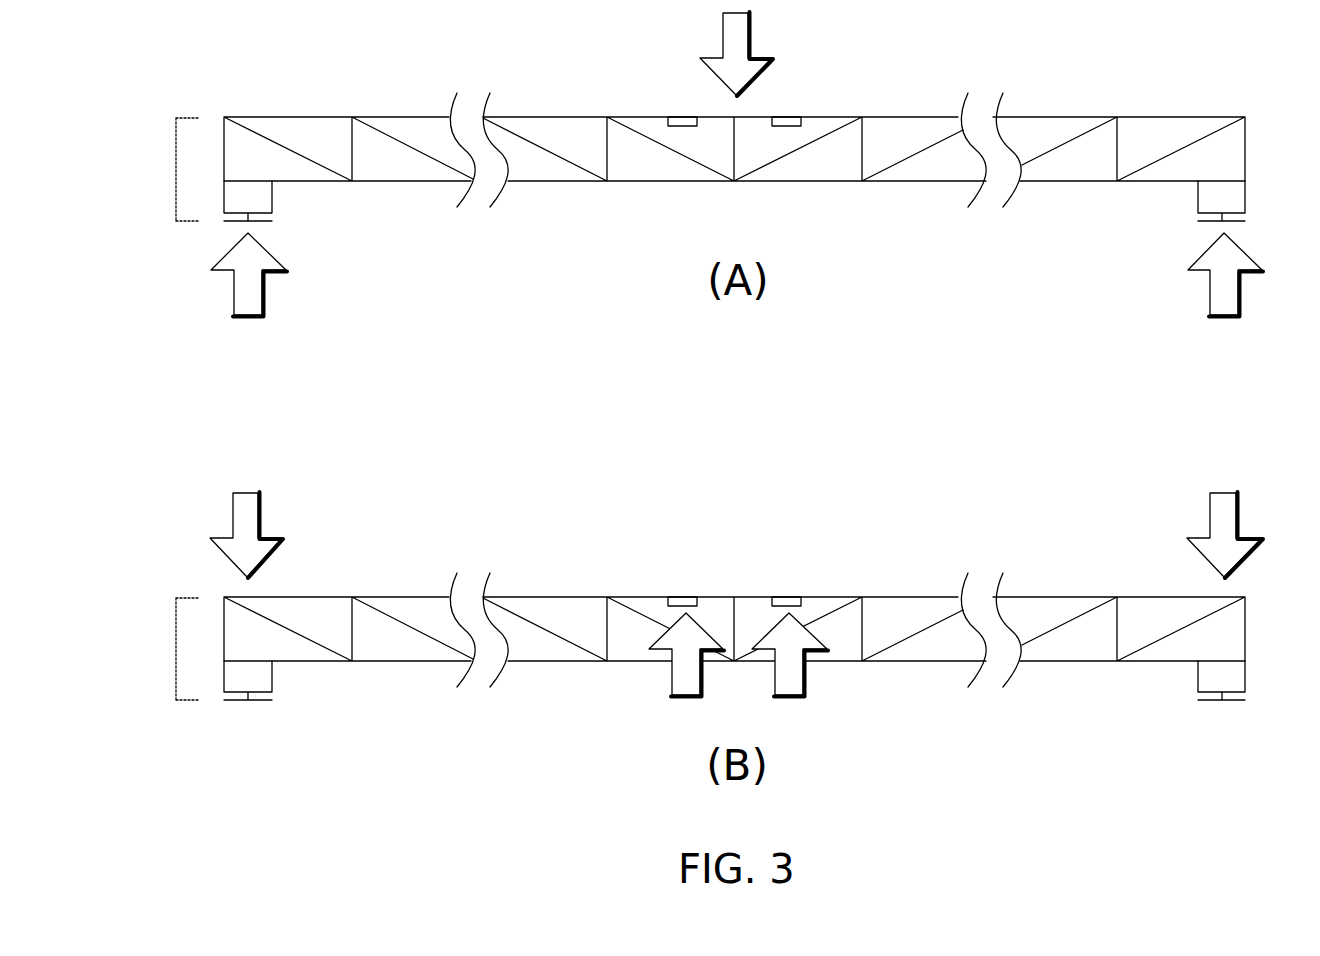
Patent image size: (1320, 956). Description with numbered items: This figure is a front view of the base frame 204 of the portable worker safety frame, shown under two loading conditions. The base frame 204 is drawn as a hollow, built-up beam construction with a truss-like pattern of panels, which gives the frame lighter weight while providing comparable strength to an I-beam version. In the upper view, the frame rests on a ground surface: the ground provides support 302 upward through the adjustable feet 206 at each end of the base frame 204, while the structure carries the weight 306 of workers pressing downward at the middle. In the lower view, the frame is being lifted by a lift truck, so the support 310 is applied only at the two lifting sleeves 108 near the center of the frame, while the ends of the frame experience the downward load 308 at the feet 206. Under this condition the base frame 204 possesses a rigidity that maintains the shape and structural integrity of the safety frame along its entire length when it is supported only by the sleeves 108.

The base frame 204 is at (176, 140).
The adjustable feet 206 is at (272, 198).
The support 302 is at (262, 283).
The weight 306 is at (748, 33).
The downward load force at supports 308 is at (258, 522).
The lifting sleeves 108 is at (686, 597).
The support 310 is at (787, 697).